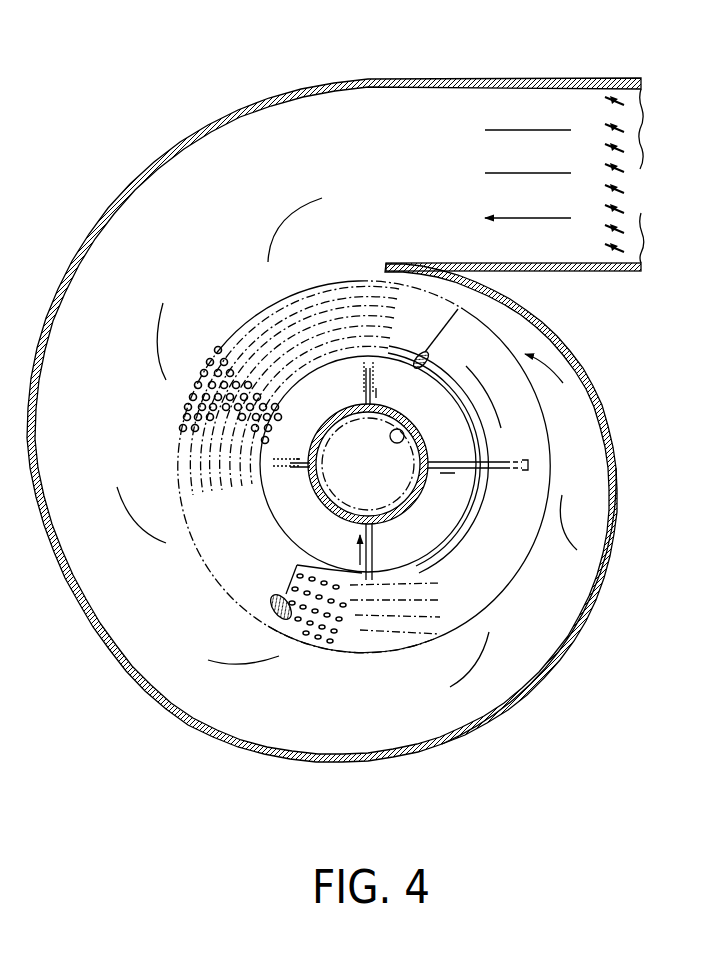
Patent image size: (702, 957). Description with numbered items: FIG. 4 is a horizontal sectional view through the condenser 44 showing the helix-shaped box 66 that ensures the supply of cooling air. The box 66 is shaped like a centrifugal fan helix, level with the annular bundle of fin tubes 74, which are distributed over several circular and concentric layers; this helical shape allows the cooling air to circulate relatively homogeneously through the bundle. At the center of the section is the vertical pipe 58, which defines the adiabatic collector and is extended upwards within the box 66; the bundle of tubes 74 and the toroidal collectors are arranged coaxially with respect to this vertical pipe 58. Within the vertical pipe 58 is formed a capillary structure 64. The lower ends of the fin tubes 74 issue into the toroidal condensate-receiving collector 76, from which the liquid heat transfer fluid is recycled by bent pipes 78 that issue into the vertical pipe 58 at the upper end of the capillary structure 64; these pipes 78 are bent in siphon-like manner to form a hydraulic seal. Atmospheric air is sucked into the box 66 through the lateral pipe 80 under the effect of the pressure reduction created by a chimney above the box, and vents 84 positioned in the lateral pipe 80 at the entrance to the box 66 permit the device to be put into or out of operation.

The condenser 44 is at (132, 168).
The vertical pipe 58 is at (322, 508).
The capillary structure 64 is at (404, 436).
The box 66 is at (541, 680).
The fin tubes 74 is at (182, 418).
The toroidal condensate-receiving collector 76 is at (407, 637).
The bent pipes 78 is at (457, 473).
The lateral pipe 80 is at (466, 81).
The vents 84 is at (609, 127).